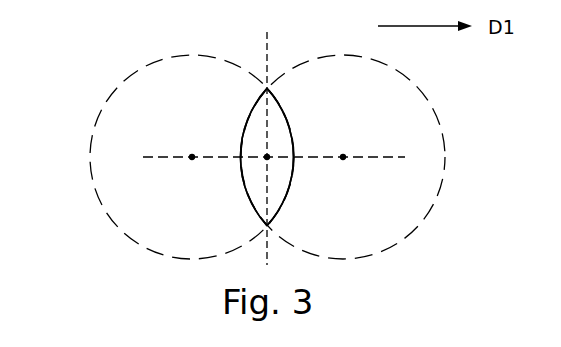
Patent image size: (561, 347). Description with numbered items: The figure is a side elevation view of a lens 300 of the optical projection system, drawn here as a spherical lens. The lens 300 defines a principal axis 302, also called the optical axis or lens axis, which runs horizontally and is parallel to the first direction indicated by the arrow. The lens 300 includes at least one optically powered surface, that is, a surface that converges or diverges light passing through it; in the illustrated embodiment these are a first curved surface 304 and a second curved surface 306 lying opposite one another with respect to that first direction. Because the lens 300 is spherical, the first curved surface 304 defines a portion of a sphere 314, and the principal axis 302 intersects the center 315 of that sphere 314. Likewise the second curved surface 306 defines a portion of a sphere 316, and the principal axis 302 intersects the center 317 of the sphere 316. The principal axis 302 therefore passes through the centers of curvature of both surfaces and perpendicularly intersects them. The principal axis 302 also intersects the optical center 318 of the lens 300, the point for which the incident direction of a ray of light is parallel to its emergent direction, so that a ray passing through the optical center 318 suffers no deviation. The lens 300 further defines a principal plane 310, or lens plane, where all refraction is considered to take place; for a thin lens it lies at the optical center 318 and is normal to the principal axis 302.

The lens 300 is at (290, 113).
The principal axis 302 is at (152, 160).
The first curved surface 304 is at (246, 124).
The second curved surface 306 is at (290, 187).
The principal plane 310 is at (268, 33).
The sphere 314 is at (100, 112).
The center of the sphere 315 is at (192, 157).
The sphere 316 is at (440, 120).
The center of the sphere 317 is at (343, 157).
The optical center 318 is at (266, 159).